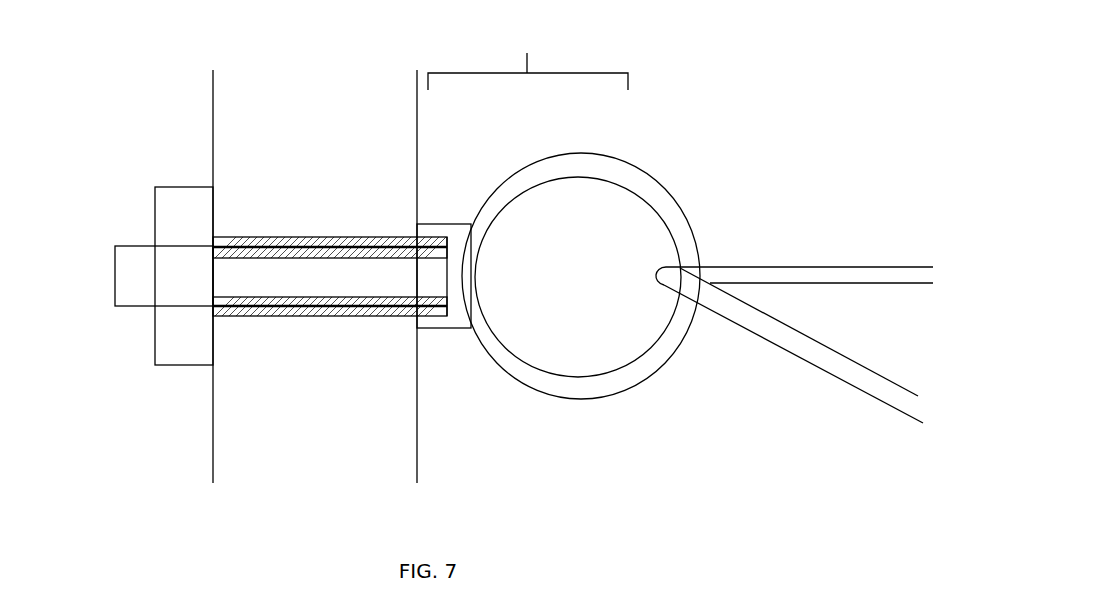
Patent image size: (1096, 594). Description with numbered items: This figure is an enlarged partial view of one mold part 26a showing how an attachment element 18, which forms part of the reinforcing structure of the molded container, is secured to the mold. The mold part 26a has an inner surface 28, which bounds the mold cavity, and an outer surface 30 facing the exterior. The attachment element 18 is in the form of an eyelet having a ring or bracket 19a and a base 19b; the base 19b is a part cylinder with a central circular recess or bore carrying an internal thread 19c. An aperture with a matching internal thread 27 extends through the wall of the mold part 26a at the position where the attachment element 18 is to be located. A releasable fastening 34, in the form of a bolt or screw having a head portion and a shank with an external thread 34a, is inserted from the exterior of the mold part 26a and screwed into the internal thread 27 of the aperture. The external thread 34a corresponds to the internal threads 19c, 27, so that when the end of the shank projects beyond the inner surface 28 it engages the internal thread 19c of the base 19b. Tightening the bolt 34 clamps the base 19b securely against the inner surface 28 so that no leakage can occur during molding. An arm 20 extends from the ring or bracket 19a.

The attachment element 18 is at (456, 213).
The ring or bracket 19a is at (594, 150).
The base 19b is at (445, 221).
The internal thread 19c is at (421, 236).
The arm 20 is at (770, 264).
The mold part 26a is at (303, 118).
The internal thread 27 is at (255, 235).
The inner surface 28 is at (420, 425).
The outer surface 30 is at (208, 448).
The releasable fastening 34 is at (108, 271).
The external thread 34a is at (220, 250).